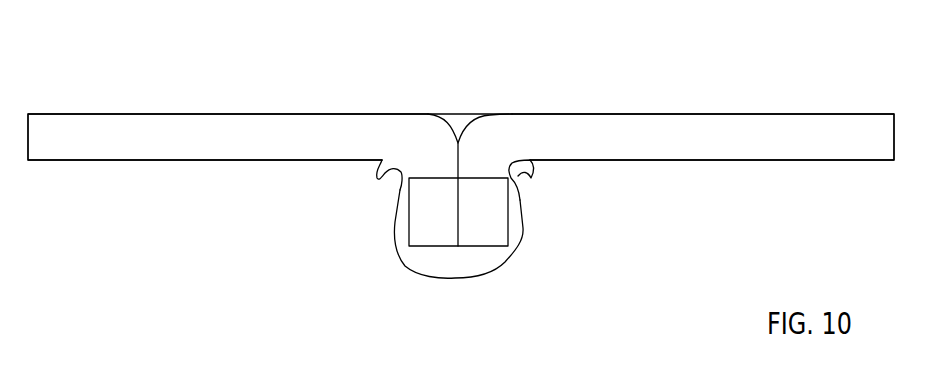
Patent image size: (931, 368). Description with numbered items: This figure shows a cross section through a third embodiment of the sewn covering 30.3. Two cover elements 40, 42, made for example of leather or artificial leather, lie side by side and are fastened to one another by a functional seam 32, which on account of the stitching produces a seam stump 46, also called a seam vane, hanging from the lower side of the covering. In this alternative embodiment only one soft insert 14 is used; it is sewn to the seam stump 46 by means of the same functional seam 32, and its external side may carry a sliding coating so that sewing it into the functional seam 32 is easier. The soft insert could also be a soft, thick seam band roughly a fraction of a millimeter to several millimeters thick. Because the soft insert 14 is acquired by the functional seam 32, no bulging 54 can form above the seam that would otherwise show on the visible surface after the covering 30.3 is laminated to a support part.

The covering 30.3 is at (75, 91).
The cover element 40 is at (700, 133).
The cover element 42 is at (177, 138).
The functional seam 32 is at (477, 174).
The soft insert 14 is at (434, 263).
The seam stump 46 is at (494, 207).
The bulging 54 is at (385, 160).